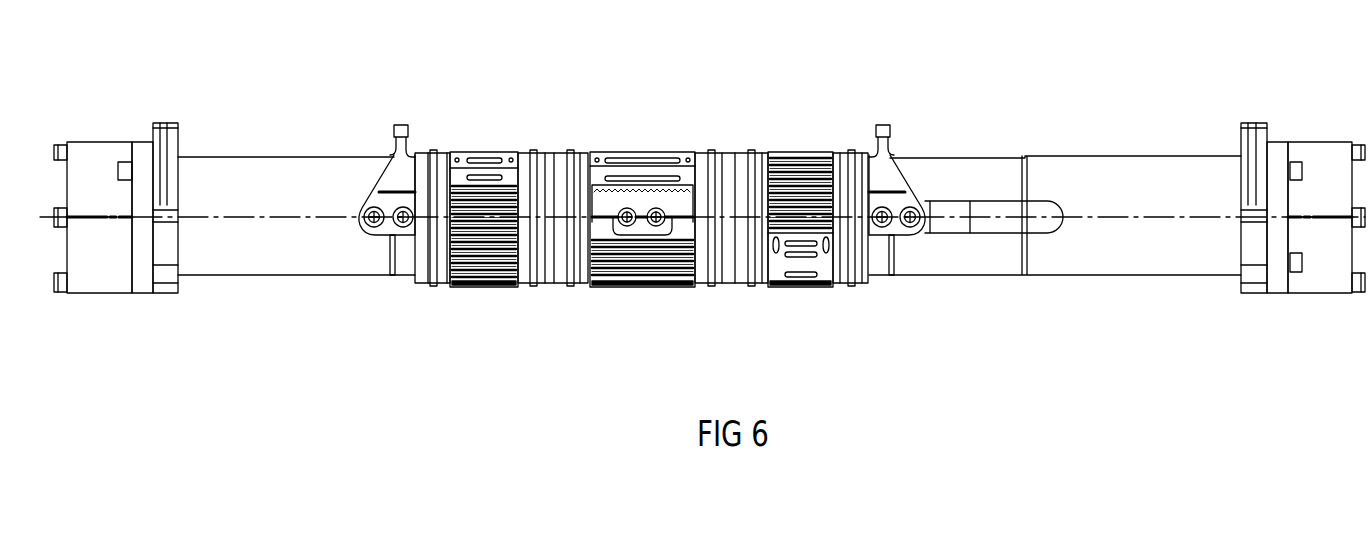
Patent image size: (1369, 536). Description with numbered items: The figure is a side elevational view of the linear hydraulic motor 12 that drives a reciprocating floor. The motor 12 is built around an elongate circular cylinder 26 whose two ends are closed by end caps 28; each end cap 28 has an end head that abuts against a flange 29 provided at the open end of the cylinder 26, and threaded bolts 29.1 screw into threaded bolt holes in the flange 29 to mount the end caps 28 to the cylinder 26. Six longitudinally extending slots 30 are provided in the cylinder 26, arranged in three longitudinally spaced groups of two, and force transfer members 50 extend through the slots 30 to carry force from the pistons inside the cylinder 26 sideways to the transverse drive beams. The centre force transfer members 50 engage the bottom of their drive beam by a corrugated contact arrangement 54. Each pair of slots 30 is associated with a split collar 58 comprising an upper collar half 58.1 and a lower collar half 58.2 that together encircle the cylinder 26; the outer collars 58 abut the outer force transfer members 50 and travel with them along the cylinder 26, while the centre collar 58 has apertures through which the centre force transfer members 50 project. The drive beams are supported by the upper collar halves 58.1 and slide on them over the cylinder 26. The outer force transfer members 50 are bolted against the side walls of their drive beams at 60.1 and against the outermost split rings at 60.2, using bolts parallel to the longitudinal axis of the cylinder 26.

The linear hydraulic motor 12 is at (1005, 145).
The elongate circular cylinder 26 is at (1131, 172).
The end cap 28 is at (80, 153).
The flange 29 is at (160, 155).
The threaded bolt 29.1 is at (124, 160).
The longitudinally extending slot 30 is at (1000, 223).
The force transfer member 50 is at (382, 237).
The corrugated contact arrangement 54 is at (646, 190).
The split collar 58 is at (480, 287).
The upper collar half 58.1 is at (432, 155).
The lower collar half 58.2 is at (424, 273).
The bolting location against drive beam side wall 60.1 is at (394, 135).
The bolting location against outermost split ring 60.2 is at (372, 175).